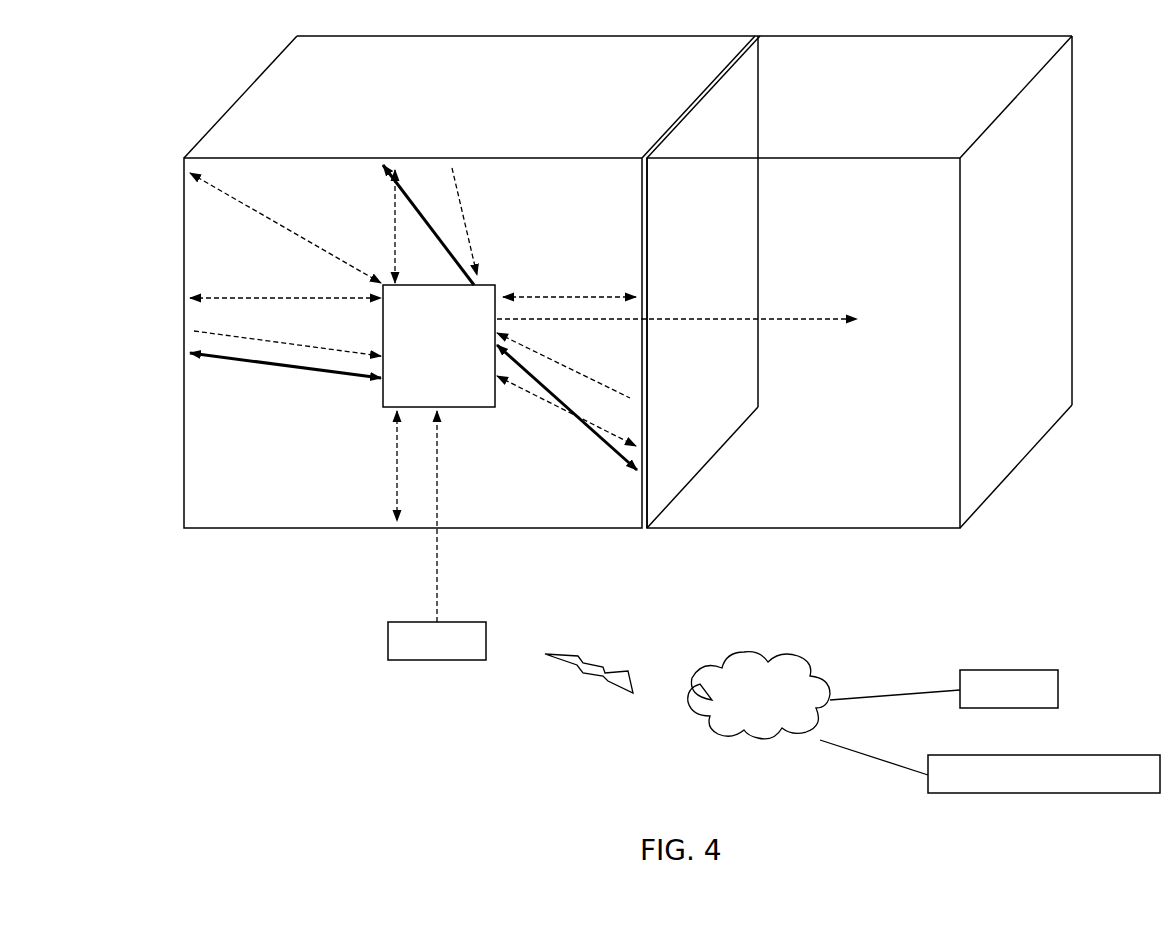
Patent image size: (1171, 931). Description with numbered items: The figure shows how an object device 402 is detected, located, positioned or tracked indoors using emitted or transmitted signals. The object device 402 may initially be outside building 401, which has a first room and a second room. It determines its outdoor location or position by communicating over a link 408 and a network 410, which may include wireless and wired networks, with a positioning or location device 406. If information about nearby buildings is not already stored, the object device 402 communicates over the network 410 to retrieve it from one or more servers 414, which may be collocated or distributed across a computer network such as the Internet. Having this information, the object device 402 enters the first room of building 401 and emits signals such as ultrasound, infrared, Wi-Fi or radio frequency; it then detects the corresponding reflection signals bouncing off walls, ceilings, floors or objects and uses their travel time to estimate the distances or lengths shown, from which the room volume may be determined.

The building 401 is at (908, 530).
The object device 402 is at (383, 395).
The positioning or location device 406 is at (928, 755).
The link 408 is at (590, 660).
The network 410 is at (748, 656).
The servers 414 is at (1022, 670).